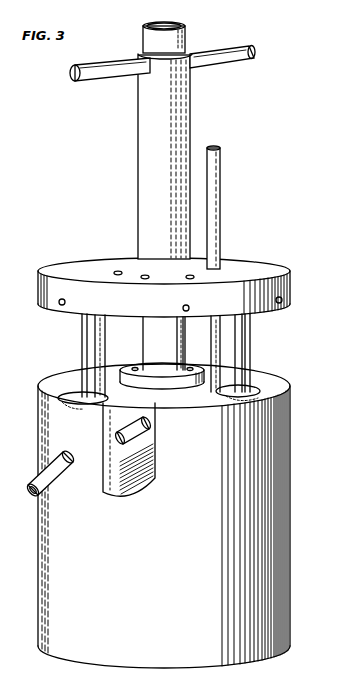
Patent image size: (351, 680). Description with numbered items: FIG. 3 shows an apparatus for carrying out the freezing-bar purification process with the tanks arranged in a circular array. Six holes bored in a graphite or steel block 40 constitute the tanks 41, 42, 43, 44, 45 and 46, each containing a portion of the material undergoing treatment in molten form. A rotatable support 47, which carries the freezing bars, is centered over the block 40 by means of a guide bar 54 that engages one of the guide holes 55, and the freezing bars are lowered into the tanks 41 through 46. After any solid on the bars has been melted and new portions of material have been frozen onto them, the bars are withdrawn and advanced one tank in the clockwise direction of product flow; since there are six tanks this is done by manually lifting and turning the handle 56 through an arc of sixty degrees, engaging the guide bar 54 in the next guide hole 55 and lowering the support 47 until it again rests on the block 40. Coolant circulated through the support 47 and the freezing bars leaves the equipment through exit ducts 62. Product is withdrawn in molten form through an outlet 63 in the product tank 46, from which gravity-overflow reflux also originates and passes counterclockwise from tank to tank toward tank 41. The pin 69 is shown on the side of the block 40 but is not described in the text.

The block 40 is at (291, 453).
The tank 41 is at (76, 398).
The tank 42 is at (42, 382).
The tank 43 is at (120, 372).
The tank 44 is at (258, 374).
The tank 45 is at (289, 385).
The product tank 46 is at (192, 400).
The rotatable support 47 is at (271, 269).
The guide bar 54 is at (215, 195).
The guide holes 55 is at (142, 277).
The handle 56 is at (250, 50).
The exit ducts 62 is at (58, 305).
The outlet 63 is at (116, 438).
The pin 69 is at (31, 497).